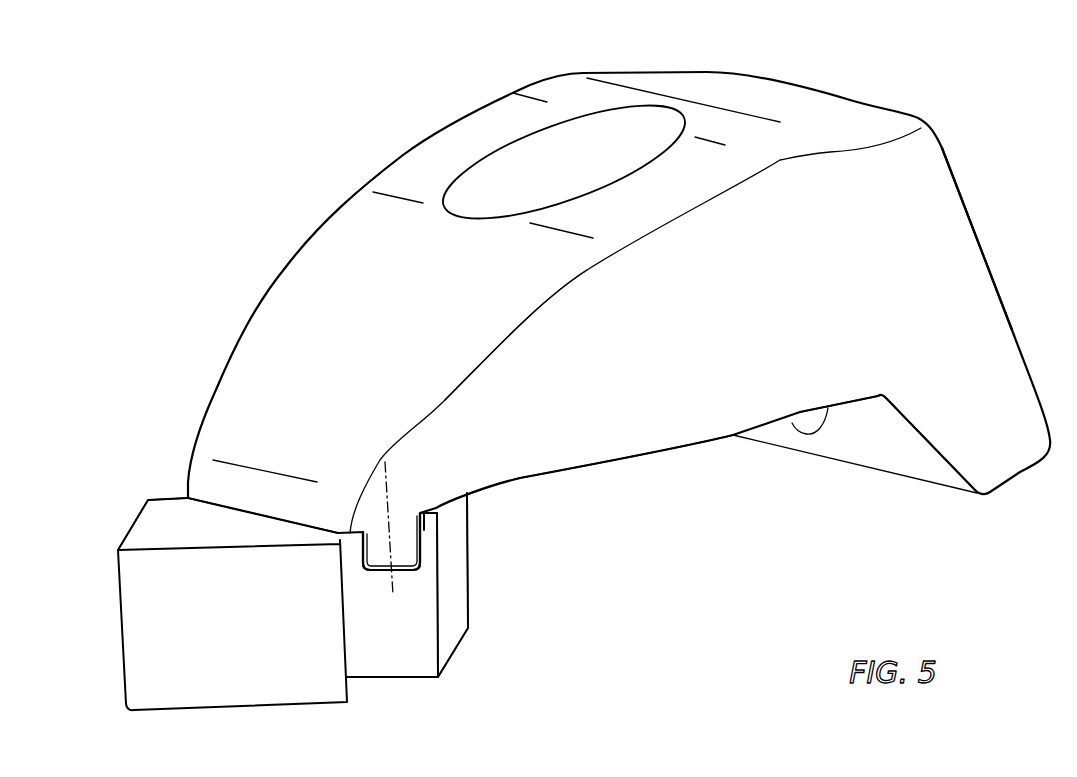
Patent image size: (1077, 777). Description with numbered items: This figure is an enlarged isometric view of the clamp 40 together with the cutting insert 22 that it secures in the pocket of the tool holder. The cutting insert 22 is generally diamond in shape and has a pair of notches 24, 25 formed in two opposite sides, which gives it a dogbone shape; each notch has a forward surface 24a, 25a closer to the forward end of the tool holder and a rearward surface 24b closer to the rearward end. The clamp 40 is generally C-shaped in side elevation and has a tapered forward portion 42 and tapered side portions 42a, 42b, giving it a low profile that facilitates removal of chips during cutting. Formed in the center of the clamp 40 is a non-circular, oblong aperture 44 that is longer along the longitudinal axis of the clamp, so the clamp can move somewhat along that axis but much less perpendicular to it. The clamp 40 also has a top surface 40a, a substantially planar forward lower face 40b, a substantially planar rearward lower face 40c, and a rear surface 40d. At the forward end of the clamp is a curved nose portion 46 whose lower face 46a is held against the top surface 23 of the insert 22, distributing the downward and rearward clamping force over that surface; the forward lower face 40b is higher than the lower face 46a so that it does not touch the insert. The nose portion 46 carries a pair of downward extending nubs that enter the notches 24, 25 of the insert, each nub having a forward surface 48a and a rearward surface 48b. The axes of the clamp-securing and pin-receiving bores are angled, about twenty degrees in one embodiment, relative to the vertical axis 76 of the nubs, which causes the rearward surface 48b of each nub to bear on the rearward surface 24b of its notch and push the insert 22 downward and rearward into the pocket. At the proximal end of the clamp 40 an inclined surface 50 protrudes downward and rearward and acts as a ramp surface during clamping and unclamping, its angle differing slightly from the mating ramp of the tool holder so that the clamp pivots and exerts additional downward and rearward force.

The cutting insert 22 is at (482, 572).
The top surface 23 is at (174, 540).
The notch 24 is at (393, 665).
The forward surface 24a is at (345, 650).
The rearward surface 24b is at (413, 627).
The notch 25 is at (162, 477).
The forward surface 25a is at (156, 498).
The clamp 40 is at (388, 93).
The top surface 40a is at (417, 178).
The forward lower face 40b is at (527, 487).
The rearward lower face 40c is at (855, 403).
The rear surface 40d is at (985, 250).
The tapered forward portion 42 is at (338, 288).
The tapered side portion 42a is at (563, 412).
The tapered side portion 42b is at (230, 357).
The aperture 44 is at (647, 120).
The nose portion 46 is at (223, 480).
The lower face 46a is at (298, 532).
The forward surface 48a is at (364, 556).
The rearward surface 48b is at (432, 530).
The inclined surface 50 is at (915, 460).
The vertical axis 76 is at (378, 490).